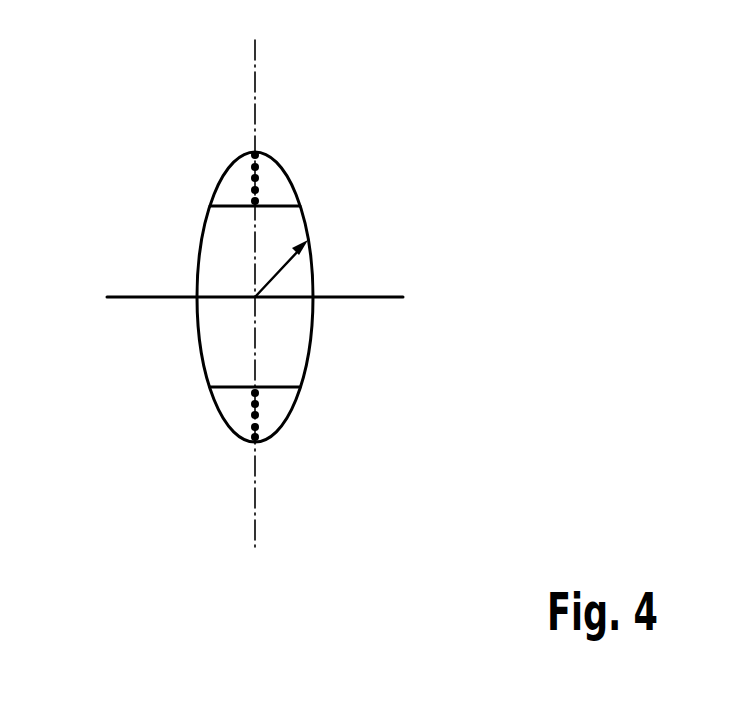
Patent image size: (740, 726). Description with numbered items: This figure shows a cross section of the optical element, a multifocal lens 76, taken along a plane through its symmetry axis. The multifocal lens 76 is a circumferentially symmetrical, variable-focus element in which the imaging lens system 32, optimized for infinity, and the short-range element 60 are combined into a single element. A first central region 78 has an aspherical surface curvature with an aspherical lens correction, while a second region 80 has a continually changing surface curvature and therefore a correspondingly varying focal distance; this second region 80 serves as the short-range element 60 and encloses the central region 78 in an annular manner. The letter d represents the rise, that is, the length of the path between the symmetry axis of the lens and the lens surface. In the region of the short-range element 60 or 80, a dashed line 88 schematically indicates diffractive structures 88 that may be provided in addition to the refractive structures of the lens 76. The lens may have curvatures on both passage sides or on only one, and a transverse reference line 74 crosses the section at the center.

The imaging lens system 32 is at (295, 348).
The short-range element 60 is at (273, 183).
The reference plane / line 74 is at (160, 288).
The multifocal lens 76 is at (362, 222).
The first central region 78 is at (255, 297).
The second region 80 is at (255, 296).
The diffractive structures 88 is at (243, 173).
The rise d is at (279, 271).